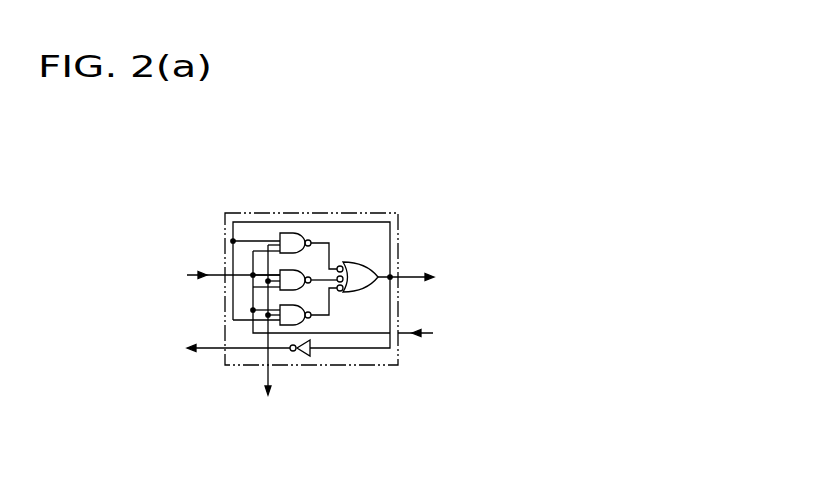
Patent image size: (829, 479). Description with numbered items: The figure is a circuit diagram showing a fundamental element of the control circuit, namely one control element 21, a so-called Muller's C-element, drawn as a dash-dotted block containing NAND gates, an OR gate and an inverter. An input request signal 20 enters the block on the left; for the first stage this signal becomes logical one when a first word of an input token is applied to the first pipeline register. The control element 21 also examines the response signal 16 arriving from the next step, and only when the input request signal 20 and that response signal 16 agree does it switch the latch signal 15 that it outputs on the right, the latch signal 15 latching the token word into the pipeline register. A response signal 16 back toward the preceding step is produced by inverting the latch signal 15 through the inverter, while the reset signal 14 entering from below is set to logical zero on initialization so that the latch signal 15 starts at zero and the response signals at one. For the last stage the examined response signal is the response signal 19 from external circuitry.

The reset signal 14 is at (270, 370).
The latch signal 15 is at (413, 270).
The response signal 16 is at (213, 350).
The response signal 19 is at (407, 335).
The input request signal 20 is at (191, 272).
The control element 21 is at (358, 208).